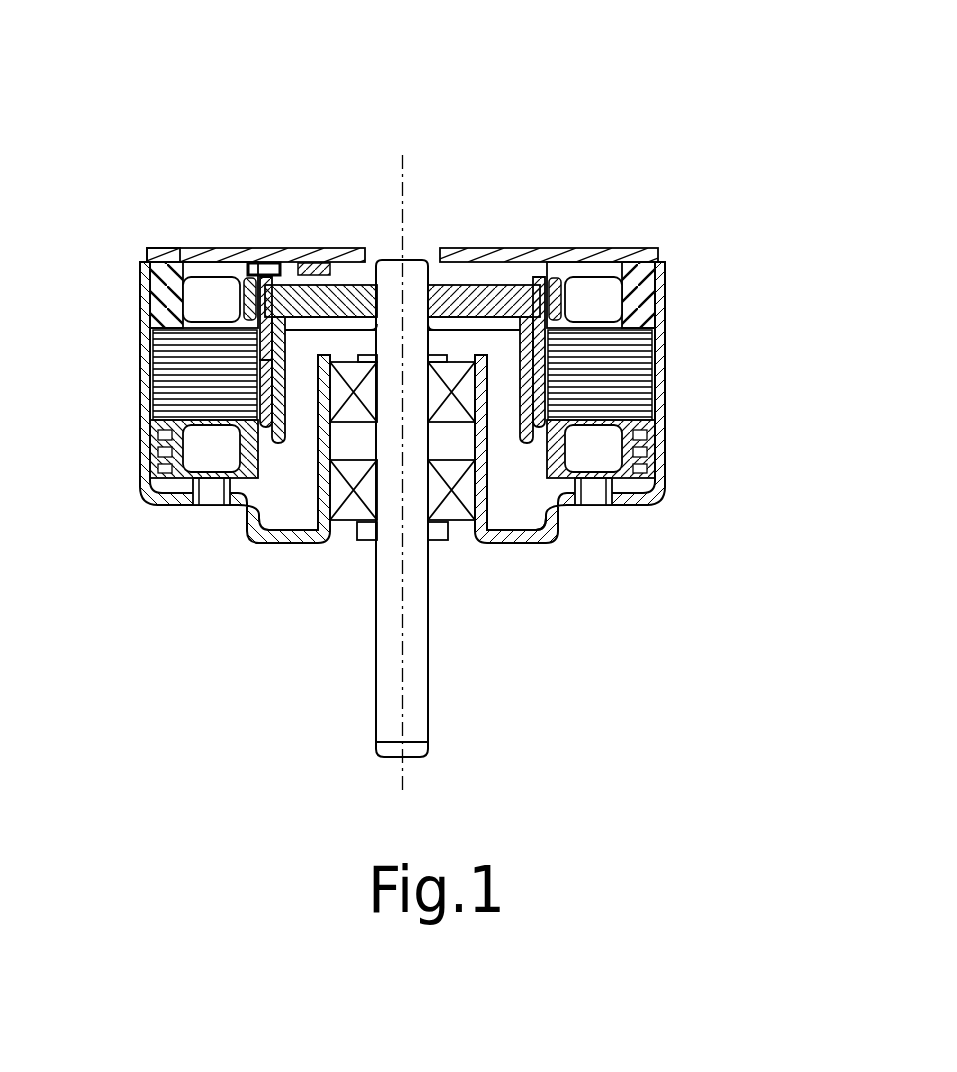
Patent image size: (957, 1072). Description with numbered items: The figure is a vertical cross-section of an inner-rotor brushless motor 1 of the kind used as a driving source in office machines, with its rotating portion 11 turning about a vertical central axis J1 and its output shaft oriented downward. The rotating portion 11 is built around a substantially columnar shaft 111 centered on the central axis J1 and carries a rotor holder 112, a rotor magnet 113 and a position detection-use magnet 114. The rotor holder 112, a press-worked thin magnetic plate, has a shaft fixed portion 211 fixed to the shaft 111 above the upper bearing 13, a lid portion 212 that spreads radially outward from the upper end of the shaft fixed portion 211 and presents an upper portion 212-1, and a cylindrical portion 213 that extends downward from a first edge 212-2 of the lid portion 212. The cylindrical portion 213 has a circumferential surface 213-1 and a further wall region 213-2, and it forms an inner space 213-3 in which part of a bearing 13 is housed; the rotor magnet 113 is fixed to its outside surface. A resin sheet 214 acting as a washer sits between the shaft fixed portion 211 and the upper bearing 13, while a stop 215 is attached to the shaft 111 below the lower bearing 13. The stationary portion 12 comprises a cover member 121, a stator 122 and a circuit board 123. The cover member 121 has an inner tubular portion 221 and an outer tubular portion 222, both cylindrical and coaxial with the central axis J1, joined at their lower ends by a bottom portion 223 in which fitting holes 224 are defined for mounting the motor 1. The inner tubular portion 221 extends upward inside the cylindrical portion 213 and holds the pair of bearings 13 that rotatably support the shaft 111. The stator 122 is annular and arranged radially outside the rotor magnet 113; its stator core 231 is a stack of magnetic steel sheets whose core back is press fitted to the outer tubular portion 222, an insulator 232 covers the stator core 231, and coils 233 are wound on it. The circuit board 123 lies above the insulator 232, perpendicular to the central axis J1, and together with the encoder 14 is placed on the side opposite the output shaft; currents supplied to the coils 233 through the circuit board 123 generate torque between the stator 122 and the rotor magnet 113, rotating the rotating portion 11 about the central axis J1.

The motor 1 is at (172, 87).
The central axis J1 is at (403, 177).
The rotating portion 11 is at (384, 101).
The shaft 111 is at (388, 708).
The rotor holder 112 is at (643, 112).
The shaft fixed portion 211 is at (500, 330).
The lid portion 212 is at (512, 420).
The upper portion 212-1 is at (518, 390).
The first edge 212-2 is at (545, 350).
The cylindrical portion 213 is at (532, 400).
The circumferential surface 213-1 is at (655, 382).
The rotor outer wall portion 213-2 is at (273, 440).
The inner space 213-3 is at (300, 420).
The bearing 13 is at (356, 335).
The encoder 14 is at (333, 250).
The rotor magnet 113 is at (251, 262).
The position detection-use magnet 114 is at (285, 262).
The stationary portion 12 is at (730, 417).
The cover member 121 is at (765, 691).
The inner tubular portion 221 is at (582, 503).
The outer tubular portion 222 is at (672, 478).
The bottom portion 223 is at (615, 478).
The fitting hole 224 is at (250, 573).
The resin sheet 214 is at (497, 532).
The stop 215 is at (433, 540).
The stator 122 is at (803, 310).
The stator core 231 is at (650, 358).
The insulator 232 is at (635, 292).
The coil 233 is at (597, 305).
The circuit board 123 is at (622, 247).